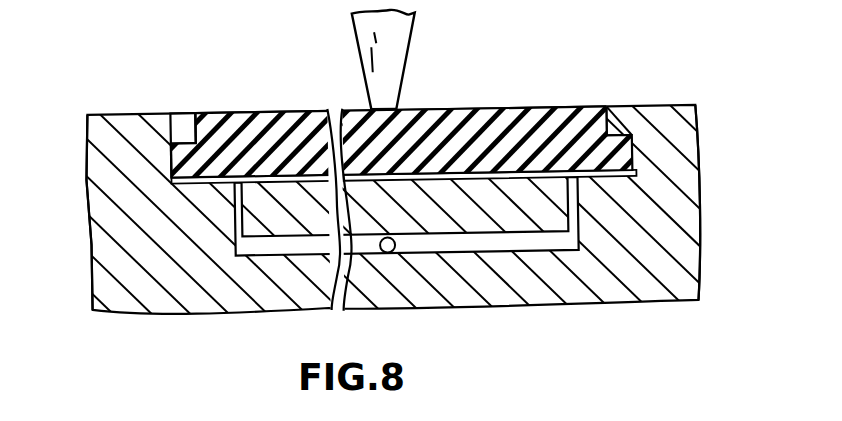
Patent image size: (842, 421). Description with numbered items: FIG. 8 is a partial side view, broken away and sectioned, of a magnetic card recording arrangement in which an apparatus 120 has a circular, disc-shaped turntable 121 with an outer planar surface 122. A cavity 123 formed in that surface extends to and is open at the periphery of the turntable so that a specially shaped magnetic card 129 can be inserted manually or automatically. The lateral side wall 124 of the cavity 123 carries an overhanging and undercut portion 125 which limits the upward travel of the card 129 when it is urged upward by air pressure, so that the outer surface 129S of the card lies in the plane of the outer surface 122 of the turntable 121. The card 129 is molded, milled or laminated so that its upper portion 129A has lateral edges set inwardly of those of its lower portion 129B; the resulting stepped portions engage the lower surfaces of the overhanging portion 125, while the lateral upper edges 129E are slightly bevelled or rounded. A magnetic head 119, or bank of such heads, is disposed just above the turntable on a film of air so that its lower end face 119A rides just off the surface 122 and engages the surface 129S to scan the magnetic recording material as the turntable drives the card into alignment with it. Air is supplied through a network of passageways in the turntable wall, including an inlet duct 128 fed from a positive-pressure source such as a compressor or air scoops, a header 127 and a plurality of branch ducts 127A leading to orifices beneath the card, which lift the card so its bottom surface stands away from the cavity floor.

The magnetic head 119 is at (420, 30).
The lower end face of the magnetic head 119A is at (383, 107).
The apparatus 120 is at (103, 92).
The turntable 121 is at (683, 132).
The outer planar surface of the turntable 122 is at (103, 115).
The cavity 123 is at (638, 178).
The lateral side wall of the cavity 124 is at (636, 154).
The overhanging undercut portion 125 is at (620, 106).
The header 127 is at (510, 243).
The branch ducts 127A is at (603, 223).
The inlet duct 128 is at (387, 253).
The magnetic card 129 is at (462, 119).
The upper portion of the card 129A is at (287, 124).
The lower portion of the card 129B is at (160, 142).
The lateral upper edges of the card 129E is at (240, 56).
The outer surface of the card 129S is at (522, 109).